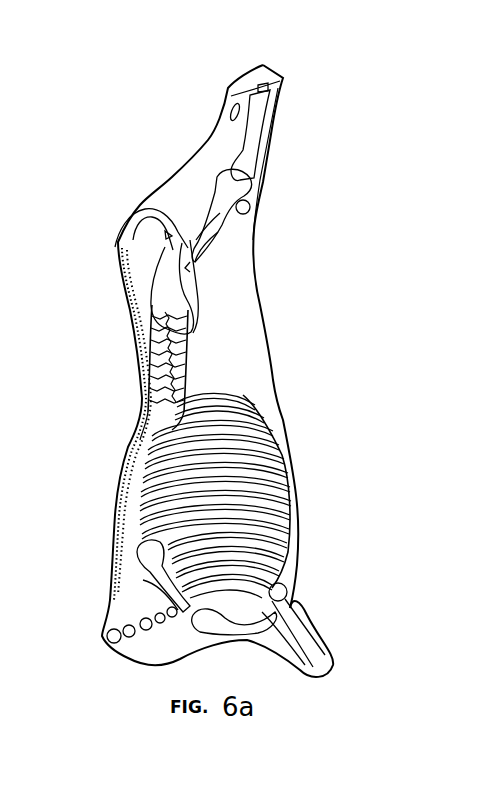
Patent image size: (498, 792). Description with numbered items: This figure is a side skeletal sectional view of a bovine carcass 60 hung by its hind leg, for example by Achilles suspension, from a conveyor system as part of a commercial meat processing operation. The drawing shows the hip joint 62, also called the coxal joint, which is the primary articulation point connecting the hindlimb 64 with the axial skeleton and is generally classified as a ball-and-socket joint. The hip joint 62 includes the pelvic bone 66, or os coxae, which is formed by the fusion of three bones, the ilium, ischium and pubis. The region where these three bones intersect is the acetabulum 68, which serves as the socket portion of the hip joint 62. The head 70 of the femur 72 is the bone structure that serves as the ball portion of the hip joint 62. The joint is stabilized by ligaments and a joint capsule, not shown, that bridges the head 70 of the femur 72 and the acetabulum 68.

The bovine carcass 60 is at (327, 72).
The hip joint 62 is at (193, 233).
The hindlimb 64 is at (263, 143).
The pelvic bone 66 is at (170, 248).
The acetabulum 68 is at (190, 268).
The head of the femur 70 is at (203, 233).
The femur 72 is at (243, 183).